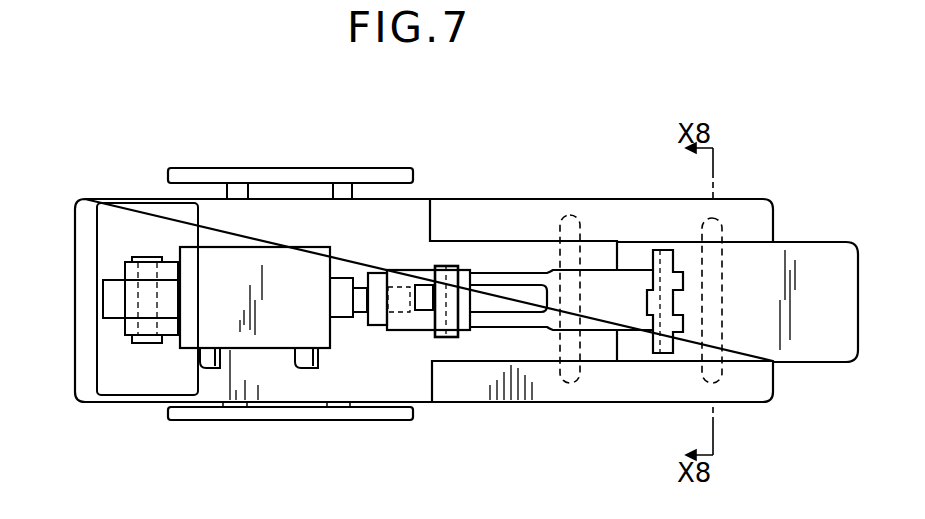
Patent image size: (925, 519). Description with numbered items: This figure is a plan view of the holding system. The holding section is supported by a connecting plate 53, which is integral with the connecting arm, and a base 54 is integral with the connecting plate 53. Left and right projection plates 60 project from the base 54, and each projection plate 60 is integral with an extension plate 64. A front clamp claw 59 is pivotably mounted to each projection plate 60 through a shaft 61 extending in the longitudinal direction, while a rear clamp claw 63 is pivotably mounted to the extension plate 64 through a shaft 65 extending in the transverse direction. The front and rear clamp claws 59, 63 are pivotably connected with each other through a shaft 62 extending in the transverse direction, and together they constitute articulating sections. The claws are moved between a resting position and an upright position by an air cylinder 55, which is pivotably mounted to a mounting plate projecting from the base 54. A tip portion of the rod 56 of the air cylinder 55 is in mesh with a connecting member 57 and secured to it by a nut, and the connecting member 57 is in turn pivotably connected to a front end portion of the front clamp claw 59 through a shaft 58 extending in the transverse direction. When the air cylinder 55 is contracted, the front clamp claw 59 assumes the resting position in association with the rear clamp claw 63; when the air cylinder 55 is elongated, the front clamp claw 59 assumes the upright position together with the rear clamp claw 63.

The connecting plate 53 is at (211, 178).
The base 54 is at (82, 397).
The air cylinder 55 is at (263, 335).
The rod 56 is at (337, 295).
The connecting member 57 is at (413, 268).
The shaft 58 is at (450, 265).
The front clamp claw 59 is at (625, 290).
The projection plates 60 is at (533, 242).
The shaft 61 is at (553, 403).
The shaft 62 is at (658, 245).
The rear clamp claw 63 is at (825, 255).
The extension plate 64 is at (748, 215).
The shaft 65 is at (700, 375).